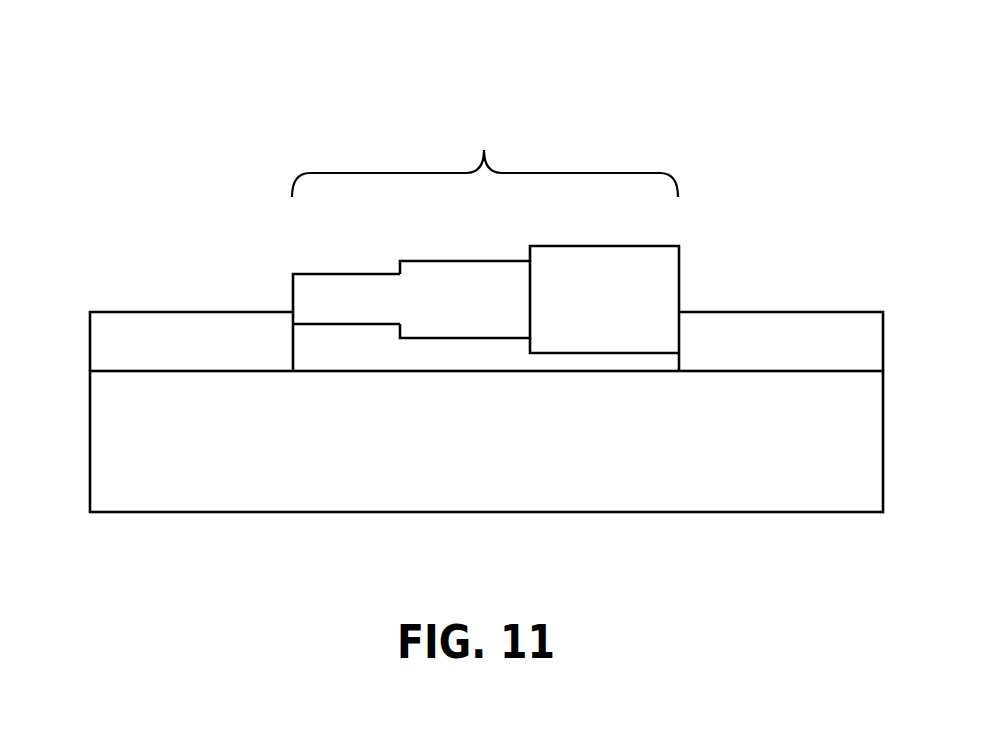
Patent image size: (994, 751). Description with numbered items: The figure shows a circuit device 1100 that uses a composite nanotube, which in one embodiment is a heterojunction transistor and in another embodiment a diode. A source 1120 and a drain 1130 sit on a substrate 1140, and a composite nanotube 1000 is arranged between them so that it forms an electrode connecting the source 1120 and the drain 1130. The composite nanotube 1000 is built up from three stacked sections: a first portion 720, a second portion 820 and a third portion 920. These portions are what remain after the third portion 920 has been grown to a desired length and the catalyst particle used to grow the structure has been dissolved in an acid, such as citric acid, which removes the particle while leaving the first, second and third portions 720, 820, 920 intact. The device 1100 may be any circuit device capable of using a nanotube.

The device 1100 is at (813, 115).
The composite nanotube 1000 is at (485, 158).
The first portion 720 is at (315, 288).
The second portion 820 is at (434, 267).
The third portion 920 is at (595, 258).
The source 1120 is at (163, 325).
The drain 1130 is at (799, 325).
The substrate 1140 is at (108, 417).